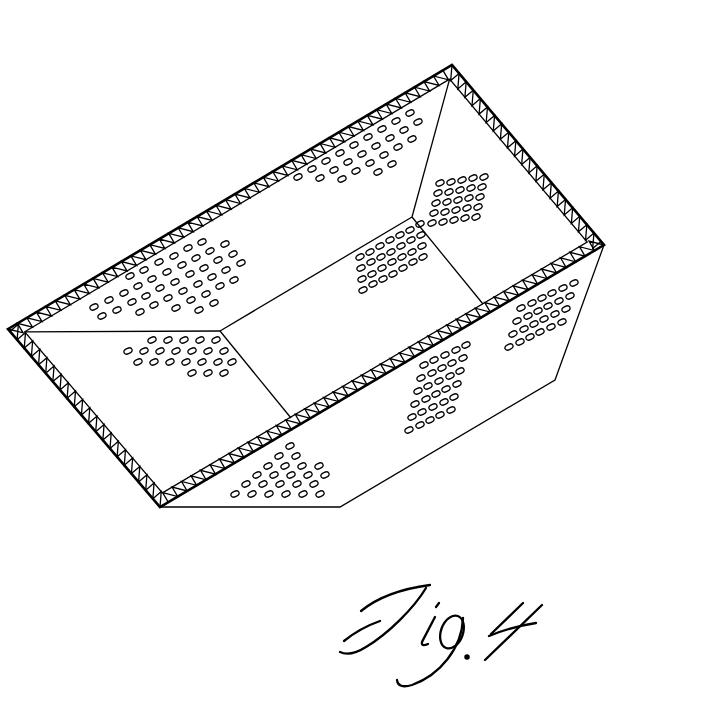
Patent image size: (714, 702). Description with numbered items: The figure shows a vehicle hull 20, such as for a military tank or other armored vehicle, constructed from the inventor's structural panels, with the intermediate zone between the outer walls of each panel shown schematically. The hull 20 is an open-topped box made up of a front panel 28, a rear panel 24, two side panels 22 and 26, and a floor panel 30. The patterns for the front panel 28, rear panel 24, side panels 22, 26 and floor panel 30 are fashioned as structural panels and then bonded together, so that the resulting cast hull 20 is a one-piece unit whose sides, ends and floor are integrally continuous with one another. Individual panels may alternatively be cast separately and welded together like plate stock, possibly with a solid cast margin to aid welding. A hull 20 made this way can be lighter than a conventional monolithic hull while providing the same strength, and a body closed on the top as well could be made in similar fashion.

The vehicle hull 20 is at (137, 238).
The side panel 22 is at (409, 88).
The rear panel 24 is at (523, 145).
The side panel 26 is at (445, 423).
The front panel 28 is at (135, 415).
The floor panel 30 is at (318, 296).